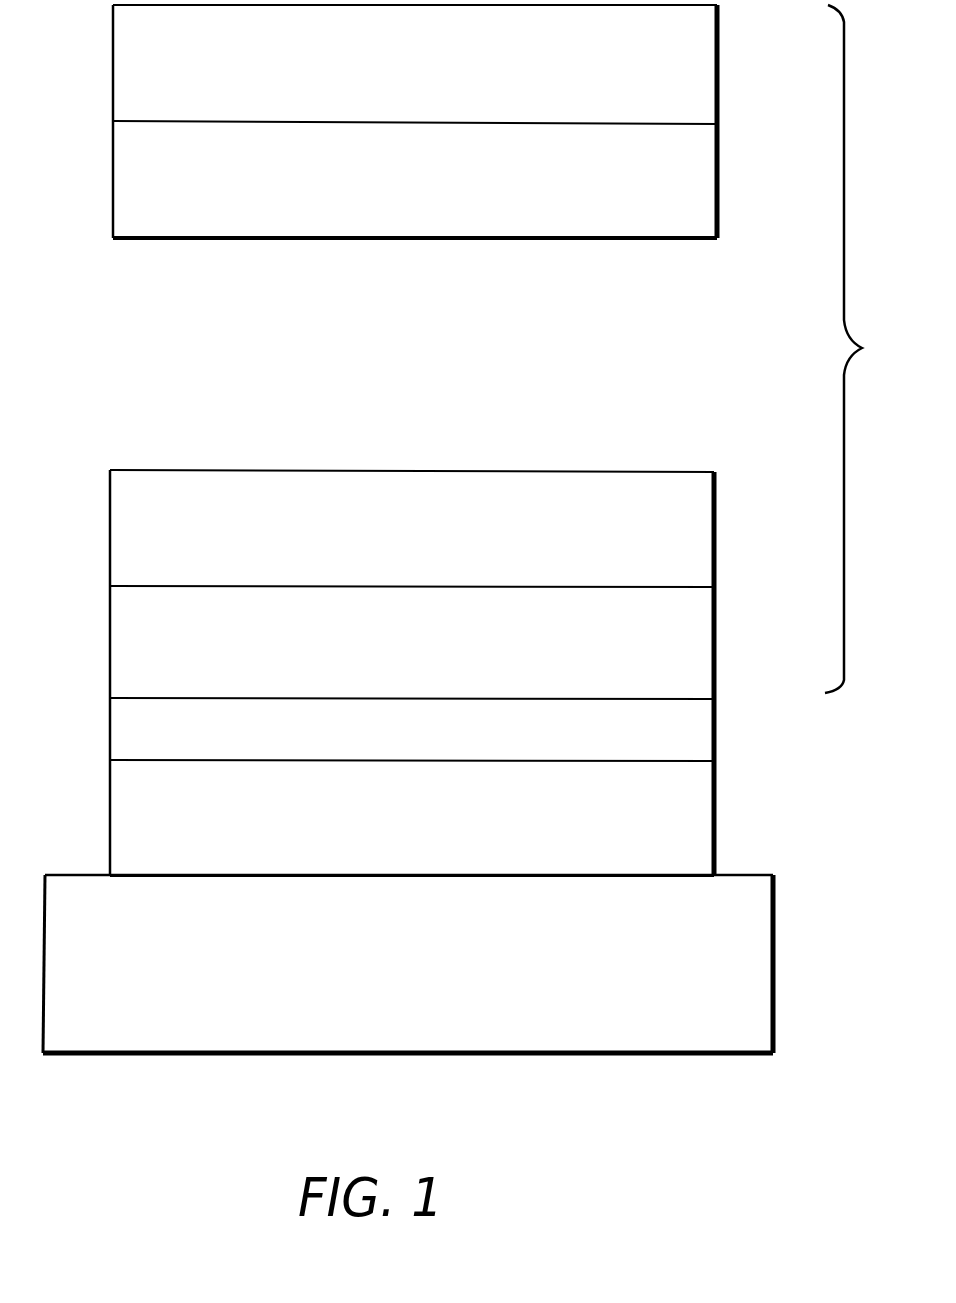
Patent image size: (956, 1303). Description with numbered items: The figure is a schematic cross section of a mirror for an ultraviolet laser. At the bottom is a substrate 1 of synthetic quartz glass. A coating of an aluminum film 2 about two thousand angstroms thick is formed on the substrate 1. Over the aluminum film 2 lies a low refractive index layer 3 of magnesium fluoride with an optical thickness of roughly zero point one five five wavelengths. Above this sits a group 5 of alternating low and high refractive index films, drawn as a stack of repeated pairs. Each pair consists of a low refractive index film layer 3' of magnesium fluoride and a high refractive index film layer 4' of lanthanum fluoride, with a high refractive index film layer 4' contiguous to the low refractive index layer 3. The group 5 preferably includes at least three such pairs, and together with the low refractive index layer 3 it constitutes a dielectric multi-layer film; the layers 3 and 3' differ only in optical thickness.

The substrate 1 is at (752, 935).
The aluminum film 2 is at (707, 812).
The low refractive index layer 3 is at (435, 744).
The low refractive index film layer 3' is at (443, 440).
The high refractive index film layer 4' is at (440, 436).
The group of alternating layers 5 is at (859, 349).